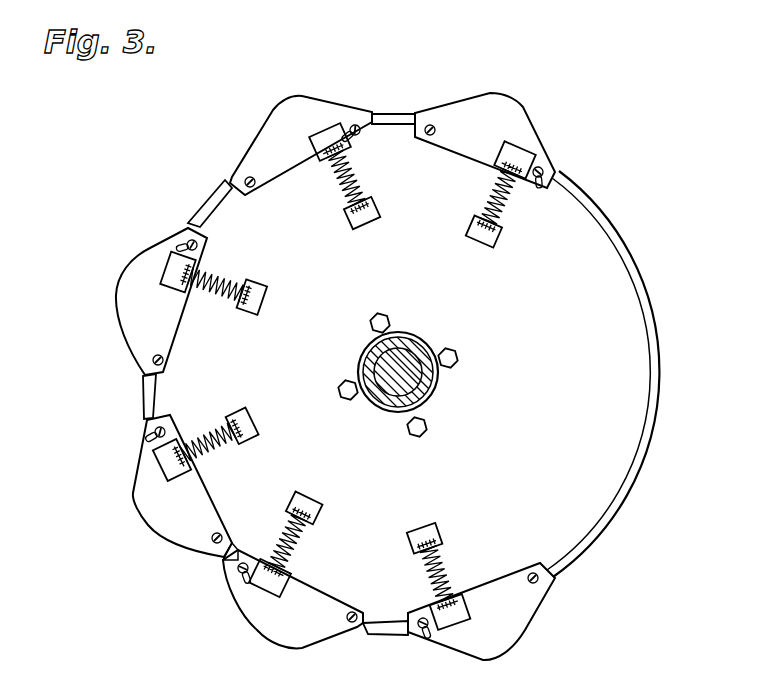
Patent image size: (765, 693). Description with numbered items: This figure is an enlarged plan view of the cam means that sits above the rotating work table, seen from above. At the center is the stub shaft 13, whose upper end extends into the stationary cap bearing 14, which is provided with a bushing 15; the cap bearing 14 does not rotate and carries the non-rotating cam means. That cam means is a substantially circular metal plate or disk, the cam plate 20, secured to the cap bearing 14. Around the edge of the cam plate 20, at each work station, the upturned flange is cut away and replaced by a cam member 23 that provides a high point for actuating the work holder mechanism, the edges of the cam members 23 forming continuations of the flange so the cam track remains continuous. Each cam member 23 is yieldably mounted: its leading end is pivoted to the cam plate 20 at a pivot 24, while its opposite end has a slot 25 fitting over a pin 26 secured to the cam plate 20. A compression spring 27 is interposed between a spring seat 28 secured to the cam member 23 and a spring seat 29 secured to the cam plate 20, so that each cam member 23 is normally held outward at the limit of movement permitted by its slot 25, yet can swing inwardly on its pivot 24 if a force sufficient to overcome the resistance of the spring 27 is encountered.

The stub shaft 13 is at (403, 387).
The stationary cap bearing 14 is at (412, 360).
The bushing 15 is at (403, 387).
The cam plate 20 is at (610, 305).
The cam member 23 is at (510, 630).
The pivot 24 is at (533, 566).
The slot 25 is at (427, 638).
The pin 26 is at (420, 628).
The compression spring 27 is at (442, 558).
The spring seat 28 is at (452, 593).
The spring seat 29 is at (420, 530).